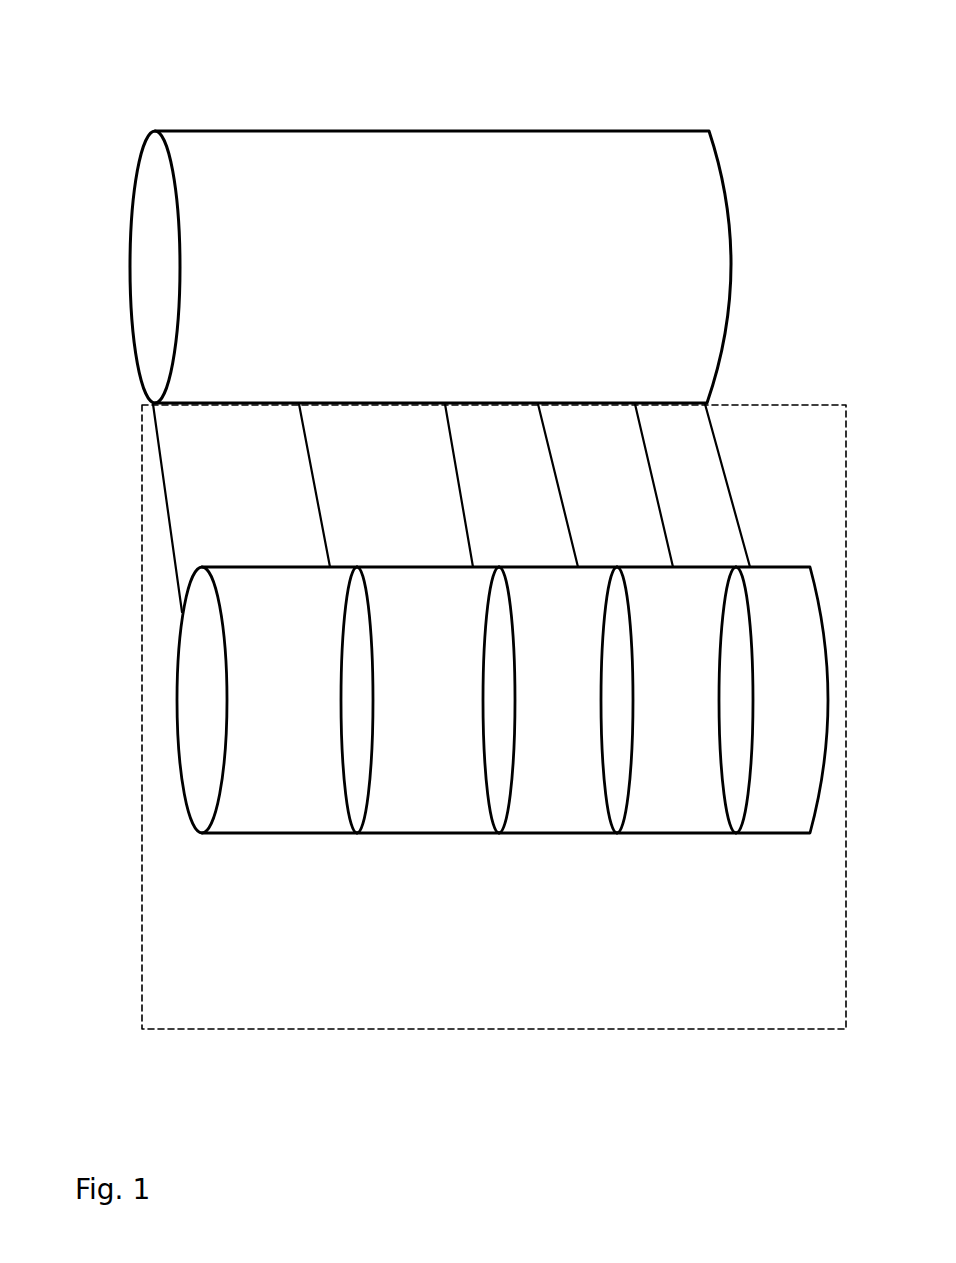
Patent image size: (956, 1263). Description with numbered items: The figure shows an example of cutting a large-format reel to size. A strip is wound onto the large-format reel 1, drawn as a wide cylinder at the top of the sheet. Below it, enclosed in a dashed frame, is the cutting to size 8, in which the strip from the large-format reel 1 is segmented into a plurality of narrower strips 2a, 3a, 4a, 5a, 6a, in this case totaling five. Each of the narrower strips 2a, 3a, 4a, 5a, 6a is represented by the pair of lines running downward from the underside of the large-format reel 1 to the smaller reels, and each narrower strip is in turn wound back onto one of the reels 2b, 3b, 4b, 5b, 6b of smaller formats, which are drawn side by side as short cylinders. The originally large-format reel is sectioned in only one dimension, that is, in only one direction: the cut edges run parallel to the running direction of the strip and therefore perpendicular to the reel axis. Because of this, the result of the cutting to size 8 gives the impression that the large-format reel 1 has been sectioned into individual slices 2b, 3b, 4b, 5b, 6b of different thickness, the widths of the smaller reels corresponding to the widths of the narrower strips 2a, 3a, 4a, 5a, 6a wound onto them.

The large-format reel 1 is at (447, 200).
The cutting to size 8 is at (142, 588).
The narrower strip 2a is at (193, 508).
The narrower strip 3a is at (349, 485).
The narrower strip 4a is at (489, 485).
The narrower strip 5a is at (581, 485).
The narrower strip 6a is at (692, 485).
The reel of smaller format 2b is at (268, 745).
The reel of smaller format 3b is at (433, 745).
The reel of smaller format 4b is at (568, 745).
The reel of smaller format 5b is at (693, 747).
The reel of smaller format 6b is at (795, 747).